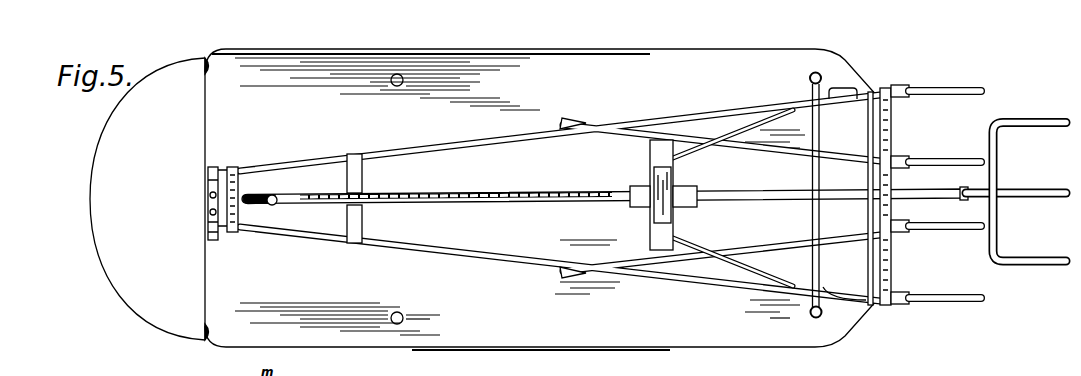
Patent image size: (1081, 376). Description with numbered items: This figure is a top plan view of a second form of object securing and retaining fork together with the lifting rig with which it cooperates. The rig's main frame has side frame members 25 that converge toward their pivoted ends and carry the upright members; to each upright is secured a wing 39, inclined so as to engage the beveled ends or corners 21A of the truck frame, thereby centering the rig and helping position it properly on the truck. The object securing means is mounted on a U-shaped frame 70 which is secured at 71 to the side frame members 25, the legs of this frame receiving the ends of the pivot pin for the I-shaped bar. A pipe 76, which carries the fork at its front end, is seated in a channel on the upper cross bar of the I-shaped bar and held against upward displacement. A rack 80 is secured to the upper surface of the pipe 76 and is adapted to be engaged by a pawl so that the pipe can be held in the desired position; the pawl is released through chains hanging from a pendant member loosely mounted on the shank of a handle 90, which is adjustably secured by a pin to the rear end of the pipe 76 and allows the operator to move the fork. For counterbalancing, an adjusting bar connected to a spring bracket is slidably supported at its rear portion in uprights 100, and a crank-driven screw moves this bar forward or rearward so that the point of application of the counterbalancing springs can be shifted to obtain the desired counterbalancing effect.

The beveled ends or corners 21A is at (840, 57).
The side frame members 25 is at (713, 117).
The wing 39 is at (865, 81).
The U-shaped frame 70 is at (660, 150).
The securing point 71 is at (695, 118).
The pipe 76 is at (524, 194).
The rack 80 is at (473, 196).
The handle 90 is at (254, 196).
The uprights 100 is at (355, 165).